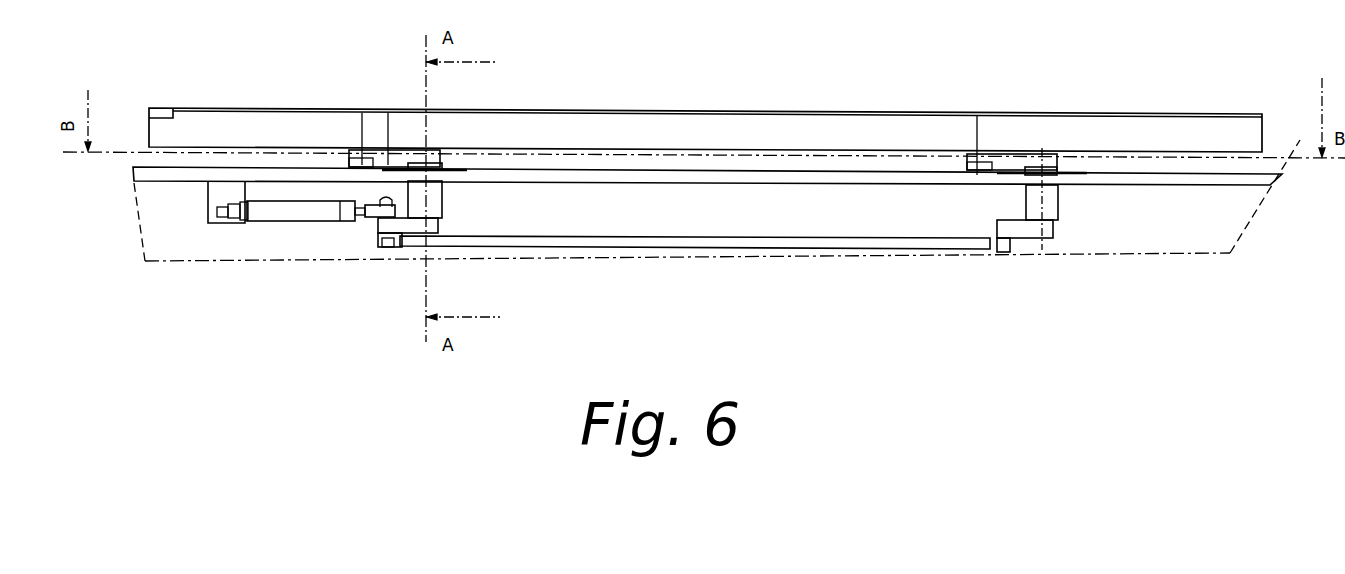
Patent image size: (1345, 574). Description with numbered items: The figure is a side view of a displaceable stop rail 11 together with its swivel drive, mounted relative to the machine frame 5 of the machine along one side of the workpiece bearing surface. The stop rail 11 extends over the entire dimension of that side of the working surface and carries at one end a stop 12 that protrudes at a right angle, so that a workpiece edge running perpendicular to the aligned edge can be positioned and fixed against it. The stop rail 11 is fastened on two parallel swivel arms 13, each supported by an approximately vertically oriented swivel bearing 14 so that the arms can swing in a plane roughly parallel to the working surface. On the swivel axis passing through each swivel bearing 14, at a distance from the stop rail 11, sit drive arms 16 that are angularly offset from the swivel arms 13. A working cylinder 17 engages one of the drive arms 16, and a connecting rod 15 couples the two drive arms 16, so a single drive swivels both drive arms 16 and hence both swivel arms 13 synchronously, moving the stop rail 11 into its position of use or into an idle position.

The machine frame 5 is at (152, 263).
The stop rail 11 is at (783, 114).
The stop 12 is at (163, 113).
The swivel arms 13 is at (390, 158).
The swivel bearing 14 is at (440, 200).
The connecting rod 15 is at (845, 245).
The drive arms 16 is at (415, 225).
The working cylinder 17 is at (312, 215).